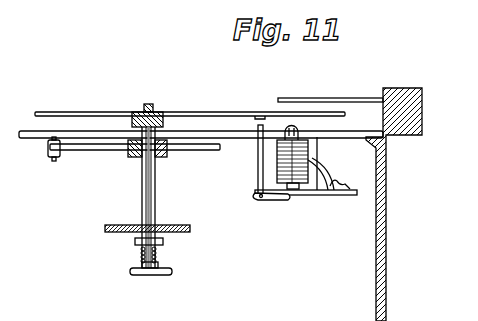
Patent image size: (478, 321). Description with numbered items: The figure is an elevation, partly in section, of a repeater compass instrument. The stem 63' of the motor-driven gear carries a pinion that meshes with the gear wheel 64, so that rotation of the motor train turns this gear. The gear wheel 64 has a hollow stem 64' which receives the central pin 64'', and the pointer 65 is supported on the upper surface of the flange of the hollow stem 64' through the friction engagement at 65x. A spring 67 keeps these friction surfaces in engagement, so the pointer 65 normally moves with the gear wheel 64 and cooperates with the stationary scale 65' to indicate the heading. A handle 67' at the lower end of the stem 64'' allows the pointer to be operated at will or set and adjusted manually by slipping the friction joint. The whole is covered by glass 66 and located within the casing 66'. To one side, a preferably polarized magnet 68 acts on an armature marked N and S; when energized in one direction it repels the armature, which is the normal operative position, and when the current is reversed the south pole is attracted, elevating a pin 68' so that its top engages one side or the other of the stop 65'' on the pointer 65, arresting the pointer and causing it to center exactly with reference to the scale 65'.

The friction engagement 65x is at (136, 118).
The pointer 65 is at (190, 101).
The stationary scale 65' is at (205, 103).
The stop 65'' is at (279, 91).
The glass 66 is at (330, 92).
The casing 66' is at (372, 204).
The gear wheel 64 is at (135, 160).
The hollow stem 64' is at (117, 197).
The central pin 64'' is at (178, 197).
The stem of gear 63 63' is at (36, 164).
The spring 67 is at (174, 253).
The handle 67' is at (154, 280).
The magnet 68 is at (315, 158).
The pin 68' is at (285, 169).